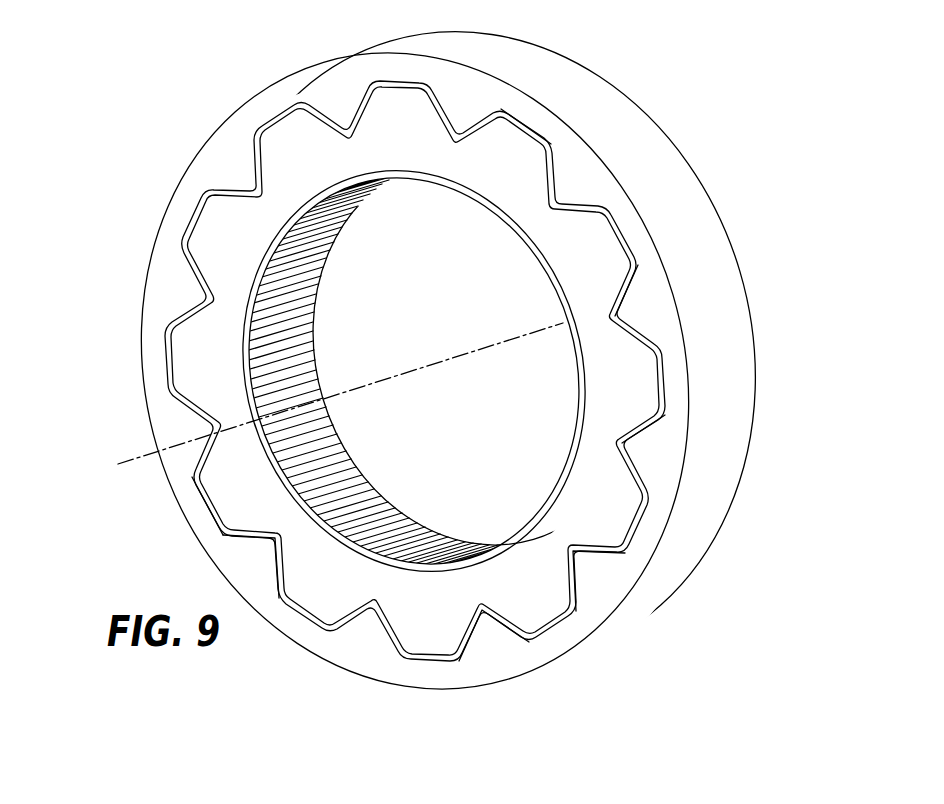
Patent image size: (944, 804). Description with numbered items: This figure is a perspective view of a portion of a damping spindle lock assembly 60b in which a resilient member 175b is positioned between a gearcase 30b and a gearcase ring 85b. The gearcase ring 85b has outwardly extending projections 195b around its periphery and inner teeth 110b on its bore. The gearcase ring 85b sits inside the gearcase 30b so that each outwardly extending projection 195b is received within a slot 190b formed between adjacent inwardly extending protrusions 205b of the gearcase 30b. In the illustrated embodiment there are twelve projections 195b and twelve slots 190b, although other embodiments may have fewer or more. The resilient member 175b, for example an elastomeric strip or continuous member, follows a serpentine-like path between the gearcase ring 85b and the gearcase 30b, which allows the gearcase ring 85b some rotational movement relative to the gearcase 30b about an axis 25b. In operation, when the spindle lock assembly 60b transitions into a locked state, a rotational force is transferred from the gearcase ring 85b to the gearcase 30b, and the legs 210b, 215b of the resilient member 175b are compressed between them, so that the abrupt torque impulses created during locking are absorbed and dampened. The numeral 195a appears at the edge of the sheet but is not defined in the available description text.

The axis 25b is at (402, 371).
The gearcase 30b is at (635, 143).
The damping spindle lock assembly 60b is at (122, 196).
The gearcase ring 85b is at (508, 170).
The inner teeth 110b is at (322, 457).
The resilient member 175b is at (598, 560).
The slot 190b is at (294, 626).
The land 195a is at (354, 72).
The outwardly extending projection 195b is at (232, 497).
The inwardly extending protrusion 205b is at (268, 548).
The leg 210b is at (626, 301).
The leg 215b is at (642, 430).